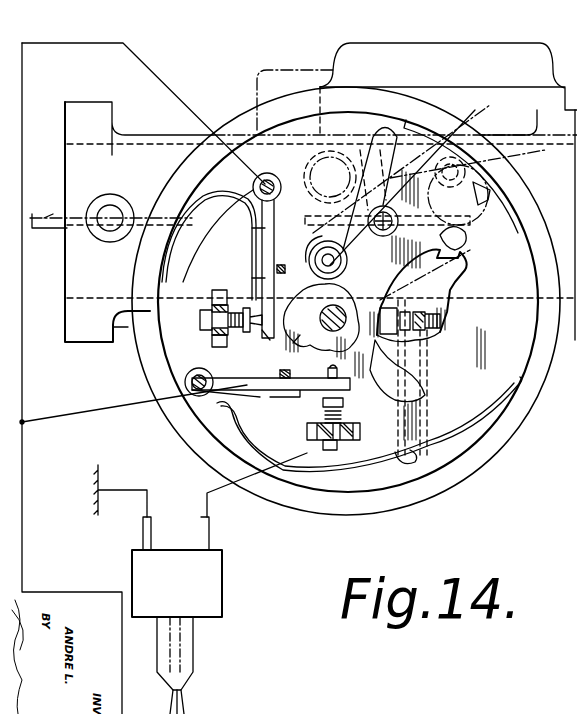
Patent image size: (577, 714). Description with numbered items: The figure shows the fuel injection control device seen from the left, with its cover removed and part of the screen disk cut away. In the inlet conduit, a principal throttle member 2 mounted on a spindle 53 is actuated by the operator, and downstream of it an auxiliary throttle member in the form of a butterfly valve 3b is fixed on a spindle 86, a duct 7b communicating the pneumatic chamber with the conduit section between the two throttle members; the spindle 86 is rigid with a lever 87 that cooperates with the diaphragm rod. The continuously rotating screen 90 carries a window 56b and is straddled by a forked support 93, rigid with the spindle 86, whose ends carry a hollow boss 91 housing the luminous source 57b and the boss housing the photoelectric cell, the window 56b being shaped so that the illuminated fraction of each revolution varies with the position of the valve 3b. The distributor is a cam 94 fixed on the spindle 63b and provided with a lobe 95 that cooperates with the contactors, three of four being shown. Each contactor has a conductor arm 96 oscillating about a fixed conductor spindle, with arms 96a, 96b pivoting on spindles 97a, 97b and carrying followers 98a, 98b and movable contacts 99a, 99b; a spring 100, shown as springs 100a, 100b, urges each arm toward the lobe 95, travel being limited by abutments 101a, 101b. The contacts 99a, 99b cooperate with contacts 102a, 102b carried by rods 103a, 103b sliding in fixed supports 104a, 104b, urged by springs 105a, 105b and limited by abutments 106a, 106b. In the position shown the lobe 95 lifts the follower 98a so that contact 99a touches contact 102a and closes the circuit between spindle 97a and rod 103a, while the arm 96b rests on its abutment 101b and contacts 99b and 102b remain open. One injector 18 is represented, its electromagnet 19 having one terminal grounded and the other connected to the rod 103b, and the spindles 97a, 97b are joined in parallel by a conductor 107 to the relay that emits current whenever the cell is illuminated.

The principal throttle member 2 is at (49, 209).
The auxiliary throttle member 3b is at (466, 241).
The duct 7b is at (284, 68).
The injector 18 is at (180, 645).
The electromagnet 19 is at (205, 580).
The spindle 53 is at (107, 213).
The window 56b is at (468, 268).
The luminous source 57b is at (310, 262).
The spindle 63b is at (336, 318).
The spindle 86 is at (395, 225).
The lever 87 is at (470, 180).
The screen 90 is at (472, 355).
The hollow boss 91 is at (318, 253).
The forked support 93 is at (440, 140).
The cam 94 is at (291, 375).
The lobe 95 is at (293, 343).
The conductor arm 96 is at (397, 337).
The conductor arm 96a is at (265, 221).
The conductor arm 96b is at (243, 384).
The conductor spindle 97a is at (266, 177).
The conductor spindle 97b is at (206, 372).
The follower 98a is at (267, 333).
The follower 98b is at (340, 378).
The electric contact 99a is at (252, 310).
The electric contact 99b is at (323, 390).
The spring 100 is at (492, 427).
The spring 100a is at (197, 200).
The spring 100b is at (233, 412).
The abutment 101a is at (277, 268).
The abutment 101b is at (250, 391).
The contact 102a is at (215, 342).
The contact 102b is at (327, 407).
The rod 103a is at (113, 327).
The rod 103b is at (330, 450).
The fixed support 104a is at (215, 315).
The fixed support 104b is at (350, 447).
The spring 105a is at (212, 296).
The spring 105b is at (343, 408).
The abutment 106a is at (200, 330).
The abutment 106b is at (337, 450).
The conductor 107 is at (342, 704).